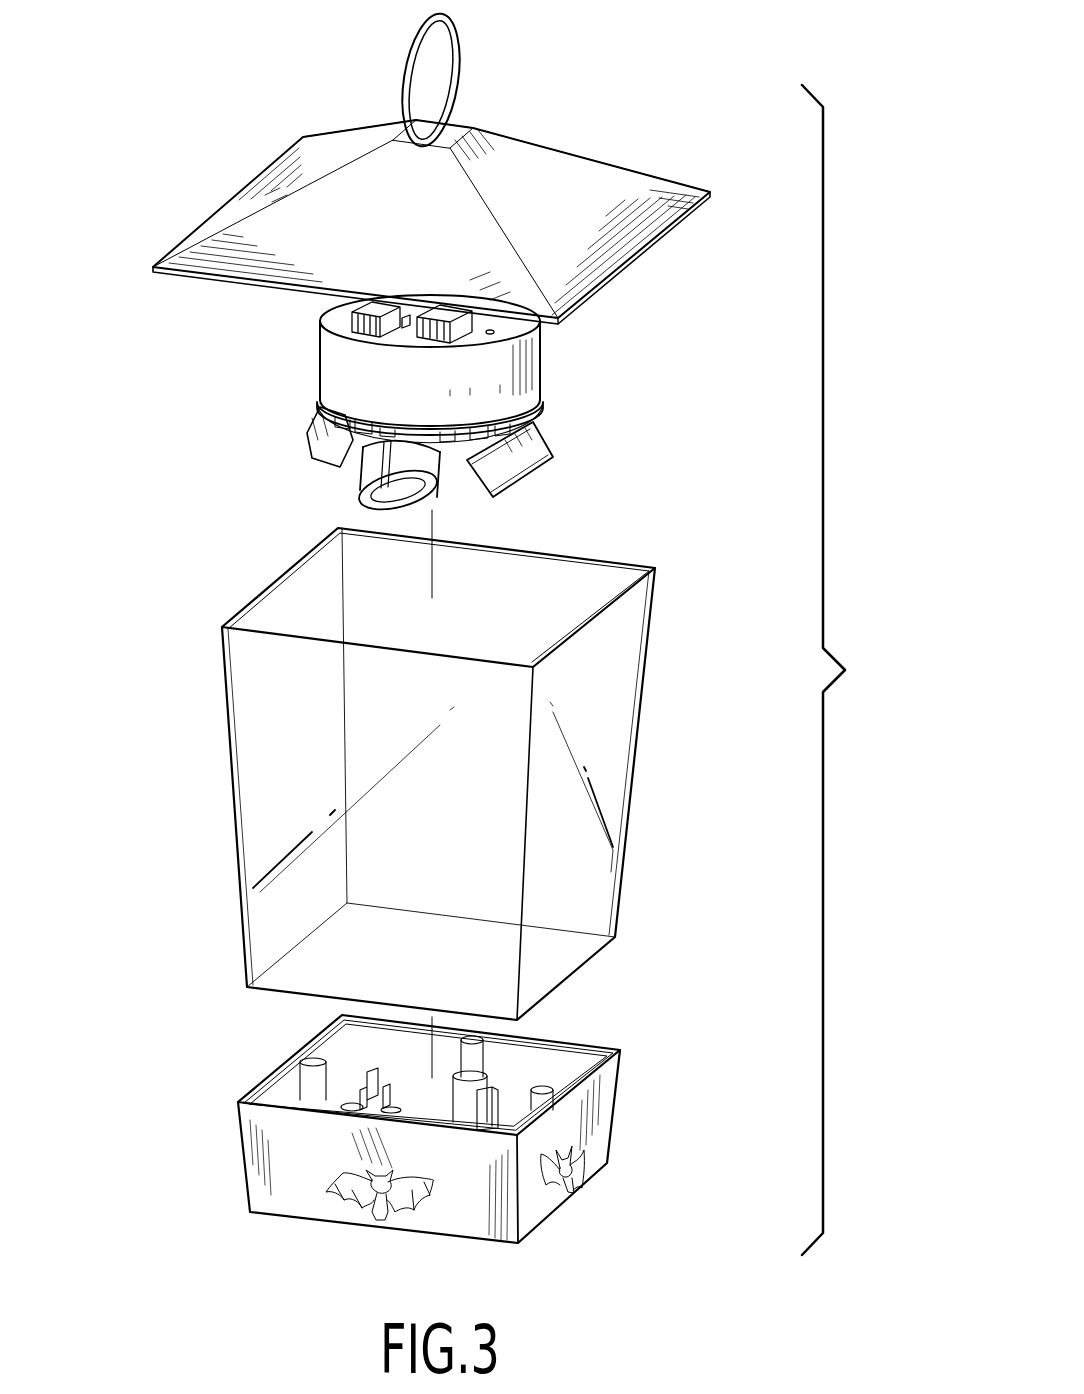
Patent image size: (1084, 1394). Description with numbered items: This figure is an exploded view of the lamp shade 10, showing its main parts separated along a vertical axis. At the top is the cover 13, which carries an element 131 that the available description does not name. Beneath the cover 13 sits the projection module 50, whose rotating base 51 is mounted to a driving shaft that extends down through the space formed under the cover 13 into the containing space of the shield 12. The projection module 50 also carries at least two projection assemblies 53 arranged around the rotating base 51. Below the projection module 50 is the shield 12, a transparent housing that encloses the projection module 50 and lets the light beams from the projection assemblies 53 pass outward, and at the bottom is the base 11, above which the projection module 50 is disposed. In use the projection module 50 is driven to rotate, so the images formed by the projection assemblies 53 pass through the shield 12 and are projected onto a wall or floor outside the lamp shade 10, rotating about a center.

The lamp shade 10 is at (593, 1218).
The base 11 is at (280, 1067).
The shield 12 is at (275, 573).
The cover 13 is at (608, 130).
The hanging ring 131 is at (456, 90).
The projection module 50 is at (557, 401).
The rotating base 51 is at (313, 388).
The projection assemblies 53 is at (545, 473).